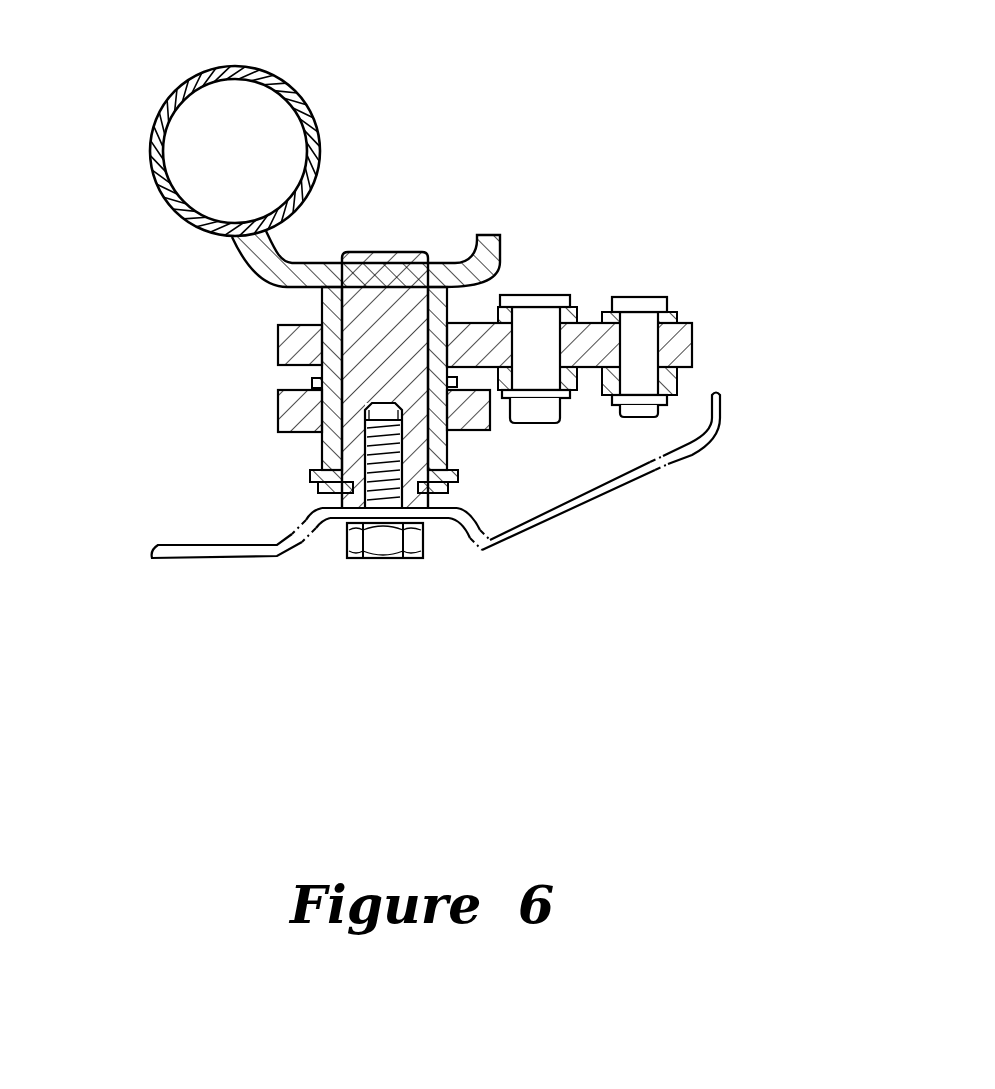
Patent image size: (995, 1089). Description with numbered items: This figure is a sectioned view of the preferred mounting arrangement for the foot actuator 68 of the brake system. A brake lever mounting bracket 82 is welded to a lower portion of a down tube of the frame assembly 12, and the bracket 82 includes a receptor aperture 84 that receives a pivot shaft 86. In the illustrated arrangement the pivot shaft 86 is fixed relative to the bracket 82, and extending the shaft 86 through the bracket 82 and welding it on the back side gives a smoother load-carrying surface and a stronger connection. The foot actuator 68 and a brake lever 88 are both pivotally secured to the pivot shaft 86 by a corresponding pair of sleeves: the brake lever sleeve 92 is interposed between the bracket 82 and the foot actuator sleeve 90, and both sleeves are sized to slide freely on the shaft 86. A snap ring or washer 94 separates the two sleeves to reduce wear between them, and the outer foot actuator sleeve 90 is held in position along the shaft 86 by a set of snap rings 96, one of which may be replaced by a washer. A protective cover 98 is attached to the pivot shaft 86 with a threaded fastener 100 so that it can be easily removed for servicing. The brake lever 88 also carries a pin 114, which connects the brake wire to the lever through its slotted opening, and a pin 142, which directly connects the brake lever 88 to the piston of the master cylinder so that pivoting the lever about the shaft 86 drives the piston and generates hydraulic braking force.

The frame assembly 12 is at (185, 80).
The foot actuator 68 is at (278, 405).
The brake lever mounting bracket 82 is at (498, 250).
The receptor aperture 84 is at (440, 260).
The pivot shaft 86 is at (385, 257).
The brake lever 88 is at (595, 320).
The foot actuator sleeve 90 is at (450, 442).
The brake lever sleeve 92 is at (320, 310).
The snap ring or washer 94 is at (312, 382).
The snap rings 96 is at (317, 475).
The protective cover 98 is at (545, 528).
The threaded fastener 100 is at (383, 555).
The pin 114 is at (643, 352).
The pin 142 is at (538, 375).